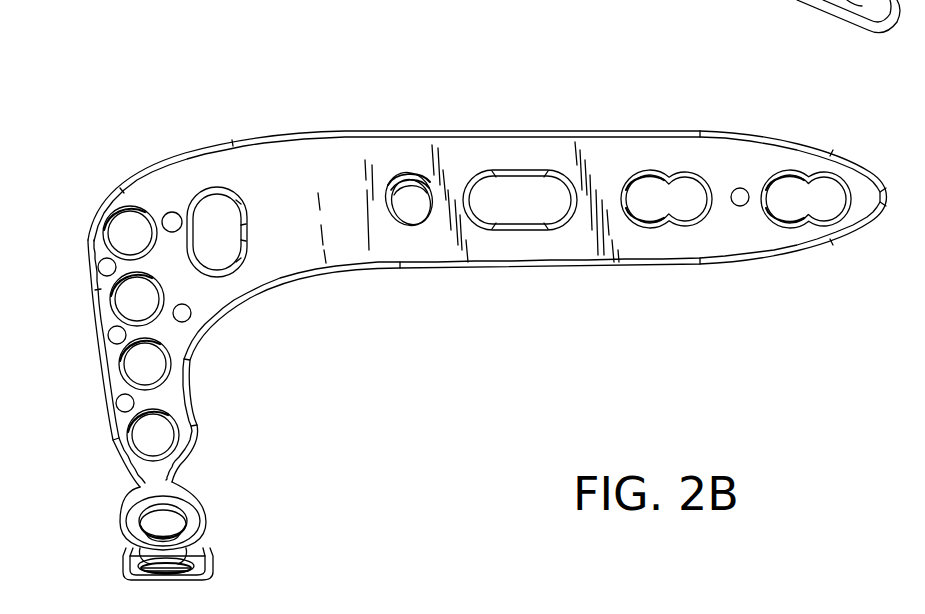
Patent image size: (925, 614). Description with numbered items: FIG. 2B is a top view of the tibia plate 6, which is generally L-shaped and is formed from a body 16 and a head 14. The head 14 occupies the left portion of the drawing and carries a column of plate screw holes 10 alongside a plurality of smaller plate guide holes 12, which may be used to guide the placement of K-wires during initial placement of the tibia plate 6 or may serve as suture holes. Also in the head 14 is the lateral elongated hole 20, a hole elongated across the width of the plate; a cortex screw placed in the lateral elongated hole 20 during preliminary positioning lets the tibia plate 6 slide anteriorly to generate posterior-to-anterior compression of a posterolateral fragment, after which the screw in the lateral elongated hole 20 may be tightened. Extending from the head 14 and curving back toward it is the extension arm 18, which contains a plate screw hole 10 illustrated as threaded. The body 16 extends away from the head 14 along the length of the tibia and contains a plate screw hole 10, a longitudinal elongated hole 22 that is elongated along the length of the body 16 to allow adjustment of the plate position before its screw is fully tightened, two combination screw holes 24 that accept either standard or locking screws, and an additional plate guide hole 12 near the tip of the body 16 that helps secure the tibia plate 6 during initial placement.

The tibia plate 6 is at (225, 87).
The plate screw hole 10 is at (410, 222).
The plate guide hole 12 is at (168, 212).
The head 14 is at (100, 210).
The body 16 is at (572, 237).
The extension arm 18 is at (127, 516).
The lateral elongated hole 20 is at (207, 205).
The longitudinal elongated hole 22 is at (514, 190).
The combination screw hole 24 is at (645, 190).